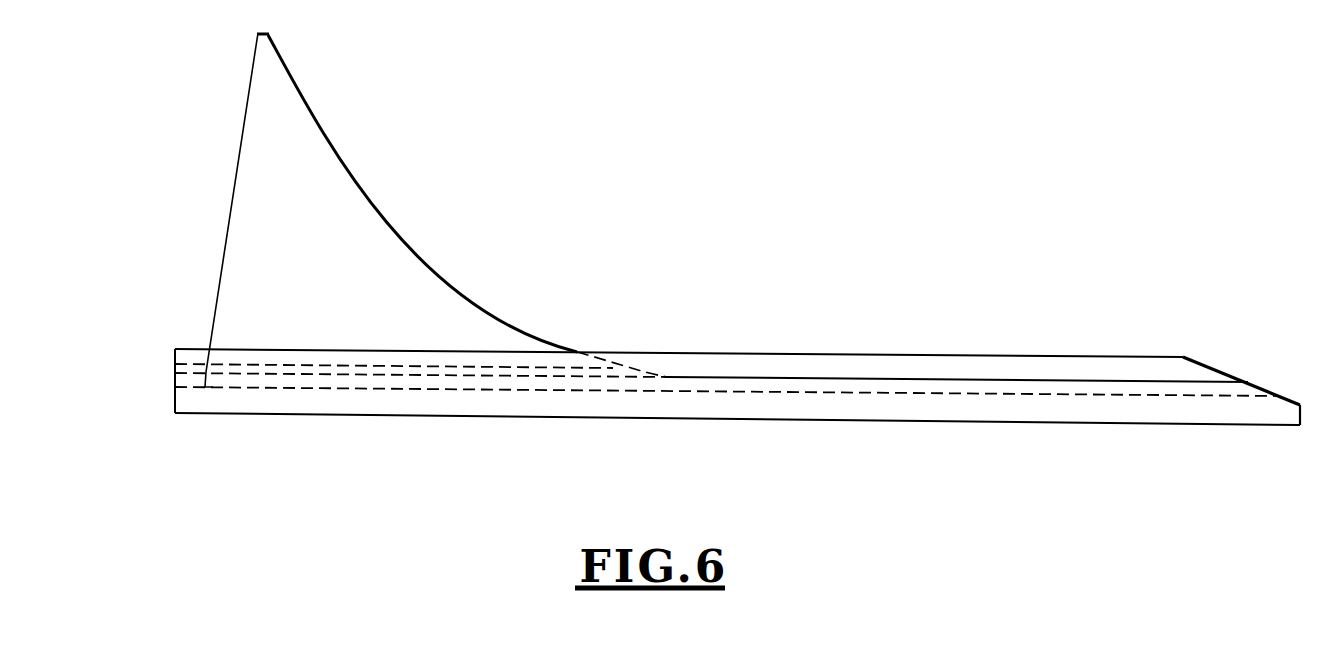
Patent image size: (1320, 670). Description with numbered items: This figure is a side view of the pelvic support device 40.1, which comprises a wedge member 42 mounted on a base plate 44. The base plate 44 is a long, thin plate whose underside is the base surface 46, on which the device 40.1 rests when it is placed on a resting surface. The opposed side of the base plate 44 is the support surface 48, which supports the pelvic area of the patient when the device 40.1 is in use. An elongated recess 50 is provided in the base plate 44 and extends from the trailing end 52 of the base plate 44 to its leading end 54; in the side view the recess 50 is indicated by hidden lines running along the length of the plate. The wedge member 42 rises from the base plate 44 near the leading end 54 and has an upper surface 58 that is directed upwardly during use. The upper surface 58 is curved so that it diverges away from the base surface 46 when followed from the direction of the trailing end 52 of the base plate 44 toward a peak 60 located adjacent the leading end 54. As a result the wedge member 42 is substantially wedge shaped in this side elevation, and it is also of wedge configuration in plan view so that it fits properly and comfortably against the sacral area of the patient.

The device 40.1 is at (605, 193).
The wedge member 42 is at (231, 203).
The base plate 44 is at (322, 400).
The base surface 46 is at (425, 418).
The support surface 48 is at (945, 353).
The elongated recess 50 is at (681, 372).
The trailing end 52 is at (1301, 406).
The leading end 54 is at (175, 393).
The upper surface 58 is at (334, 152).
The peak 60 is at (269, 33).